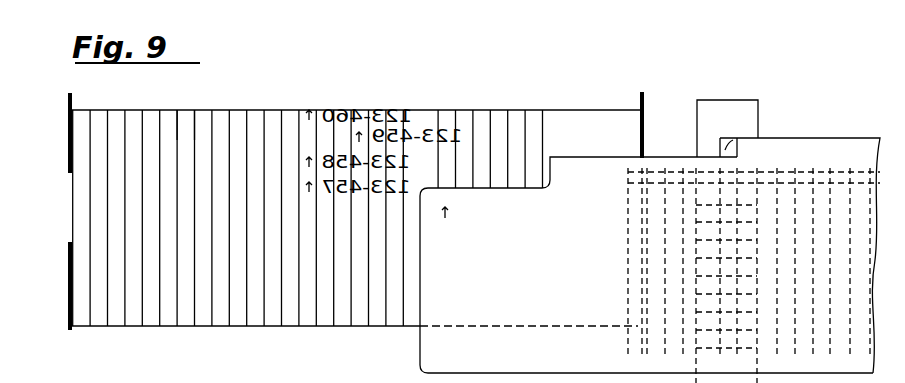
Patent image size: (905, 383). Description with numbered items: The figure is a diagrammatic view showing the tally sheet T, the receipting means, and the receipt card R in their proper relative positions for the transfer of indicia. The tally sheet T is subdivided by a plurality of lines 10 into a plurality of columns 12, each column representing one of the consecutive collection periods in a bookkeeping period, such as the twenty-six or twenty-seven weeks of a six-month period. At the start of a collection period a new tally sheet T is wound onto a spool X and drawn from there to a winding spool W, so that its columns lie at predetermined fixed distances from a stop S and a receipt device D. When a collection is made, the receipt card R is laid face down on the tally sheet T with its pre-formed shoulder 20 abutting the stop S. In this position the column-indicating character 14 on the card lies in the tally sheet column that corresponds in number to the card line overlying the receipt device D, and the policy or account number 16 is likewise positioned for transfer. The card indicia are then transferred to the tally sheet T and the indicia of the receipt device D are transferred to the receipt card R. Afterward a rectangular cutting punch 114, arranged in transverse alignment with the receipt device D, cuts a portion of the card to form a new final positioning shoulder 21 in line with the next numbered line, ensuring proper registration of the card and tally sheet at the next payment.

The lines 10 is at (128, 123).
The columns 12 is at (187, 118).
The column-indicating character 14 is at (444, 220).
The policy or account number 16 is at (505, 223).
The pre-formed shoulder 20 is at (725, 147).
The final positioning shoulder 21 is at (553, 175).
The rectangular cutting punch 114 is at (730, 143).
The winding spool W is at (68, 123).
The spool X is at (68, 303).
The tally sheet T is at (237, 312).
The stop S is at (720, 150).
The receipt device D is at (745, 208).
The receipt card R is at (837, 139).